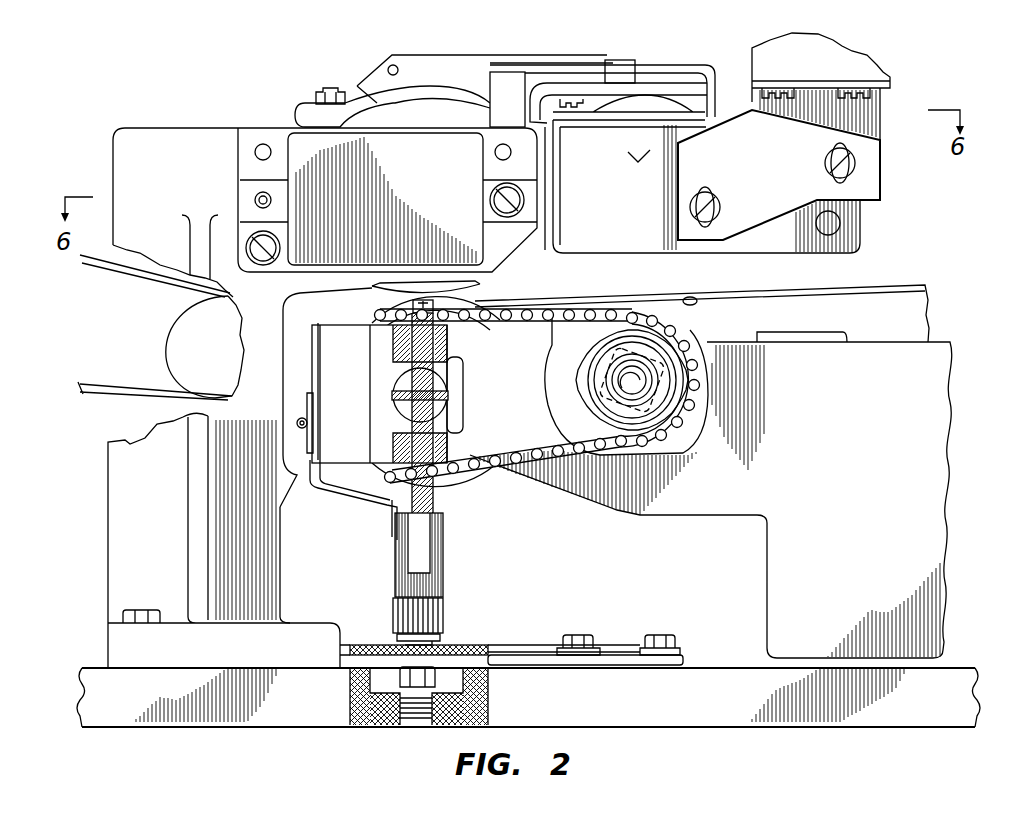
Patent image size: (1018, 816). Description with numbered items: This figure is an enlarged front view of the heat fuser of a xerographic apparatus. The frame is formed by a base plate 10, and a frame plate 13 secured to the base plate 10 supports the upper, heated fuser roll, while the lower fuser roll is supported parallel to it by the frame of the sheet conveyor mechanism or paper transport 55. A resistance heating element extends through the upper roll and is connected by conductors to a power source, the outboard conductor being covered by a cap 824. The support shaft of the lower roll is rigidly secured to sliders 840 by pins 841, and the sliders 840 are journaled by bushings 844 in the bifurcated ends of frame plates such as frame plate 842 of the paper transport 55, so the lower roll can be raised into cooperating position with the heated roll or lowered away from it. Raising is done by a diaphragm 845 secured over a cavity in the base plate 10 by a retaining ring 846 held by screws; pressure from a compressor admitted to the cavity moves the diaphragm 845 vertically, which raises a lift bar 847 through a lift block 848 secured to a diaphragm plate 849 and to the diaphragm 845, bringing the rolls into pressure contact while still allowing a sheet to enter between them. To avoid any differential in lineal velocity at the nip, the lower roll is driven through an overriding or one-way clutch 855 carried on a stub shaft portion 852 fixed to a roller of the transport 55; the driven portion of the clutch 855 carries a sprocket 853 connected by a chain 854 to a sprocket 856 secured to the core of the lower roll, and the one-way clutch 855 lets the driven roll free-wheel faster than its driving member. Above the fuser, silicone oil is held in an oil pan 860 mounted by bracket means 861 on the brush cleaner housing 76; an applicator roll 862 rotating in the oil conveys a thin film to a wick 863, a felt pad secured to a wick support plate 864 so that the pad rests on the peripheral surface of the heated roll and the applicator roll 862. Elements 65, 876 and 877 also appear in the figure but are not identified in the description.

The base plate 10 is at (935, 728).
The frame plate 13 is at (108, 556).
The sheet conveyor mechanism 55 is at (930, 277).
The guide arm 65 is at (92, 410).
The brush cleaner housing 76 is at (840, 42).
The cap 824 is at (290, 170).
The sliders 840 is at (440, 496).
The pins 841 is at (452, 396).
The frame plate 842 is at (946, 465).
The bushings 844 is at (456, 362).
The diaphragm 845 is at (488, 685).
The retaining ring 846 is at (685, 663).
The lift bar 847 is at (444, 565).
The lift block 848 is at (444, 612).
The diaphragm plate 849 is at (495, 645).
The stub shaft portion 852 is at (650, 360).
The sprocket 853 is at (568, 378).
The chain 854 is at (668, 372).
The overriding clutch 855 is at (668, 385).
The sprocket 856 is at (455, 300).
The oil pan 860 is at (608, 264).
The bracket means 861 is at (878, 138).
The applicator roll 862 is at (588, 120).
The wick 863 is at (540, 128).
The wick support plate 864 is at (418, 92).
The bar 876 is at (465, 56).
The bracket plate 877 is at (382, 72).